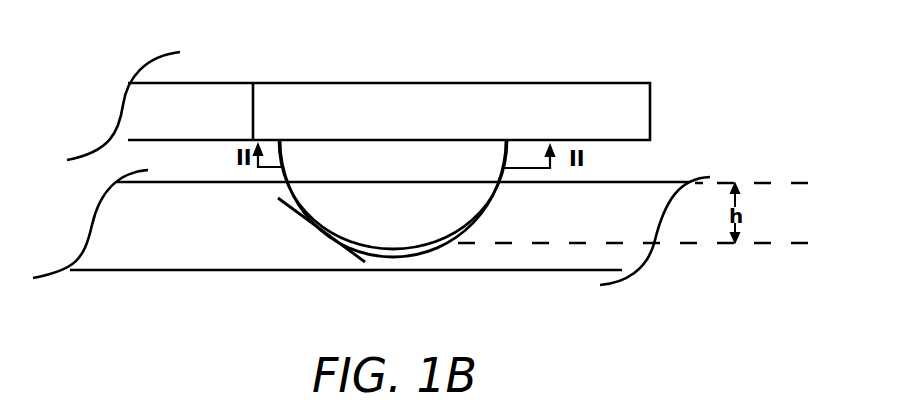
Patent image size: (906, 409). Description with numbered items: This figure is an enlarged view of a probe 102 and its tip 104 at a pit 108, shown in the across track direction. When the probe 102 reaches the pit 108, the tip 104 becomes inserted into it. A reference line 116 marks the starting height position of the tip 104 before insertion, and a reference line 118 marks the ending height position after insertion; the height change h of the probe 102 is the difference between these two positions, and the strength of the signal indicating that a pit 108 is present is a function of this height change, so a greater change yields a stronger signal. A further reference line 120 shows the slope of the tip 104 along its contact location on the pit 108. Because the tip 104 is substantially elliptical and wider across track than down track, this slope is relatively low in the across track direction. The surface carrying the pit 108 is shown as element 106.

The probe 102 is at (583, 83).
The tip 104 is at (433, 238).
The second substrate / circuit board 106 is at (118, 270).
The pit 108 is at (498, 207).
The reference line 116 is at (735, 183).
The reference line 118 is at (680, 245).
The reference line 120 is at (298, 216).